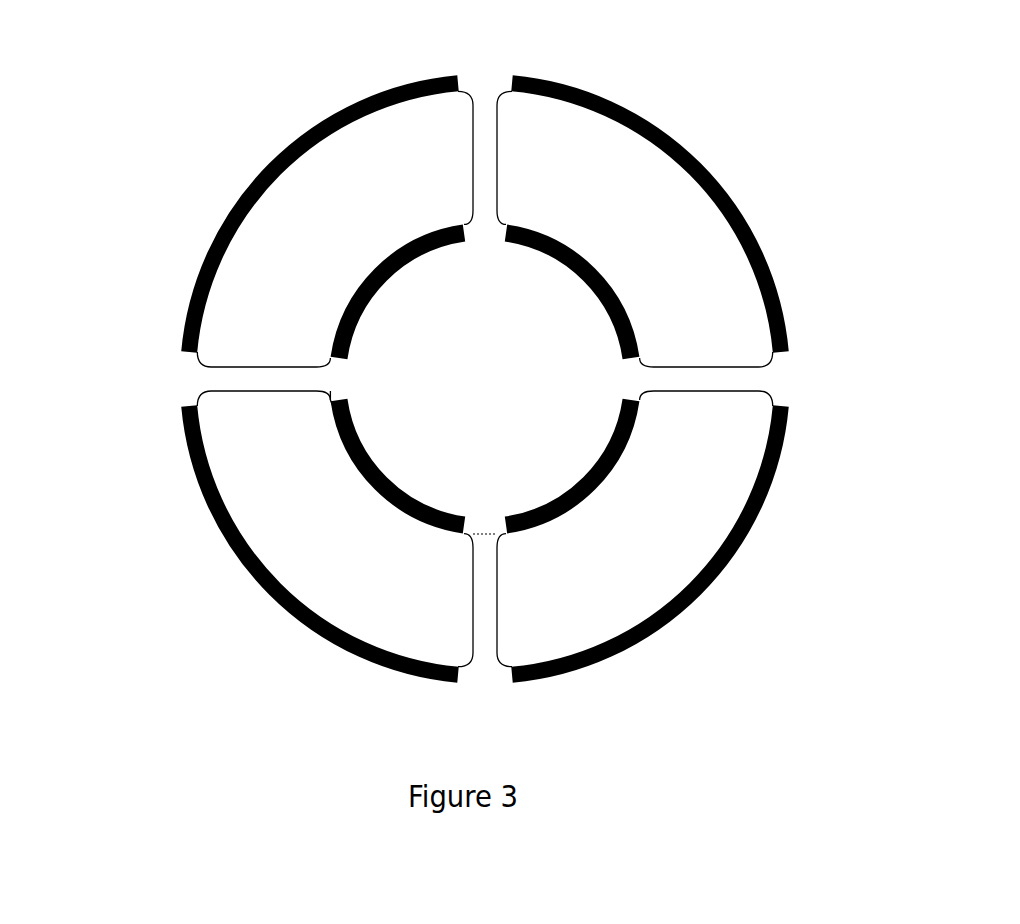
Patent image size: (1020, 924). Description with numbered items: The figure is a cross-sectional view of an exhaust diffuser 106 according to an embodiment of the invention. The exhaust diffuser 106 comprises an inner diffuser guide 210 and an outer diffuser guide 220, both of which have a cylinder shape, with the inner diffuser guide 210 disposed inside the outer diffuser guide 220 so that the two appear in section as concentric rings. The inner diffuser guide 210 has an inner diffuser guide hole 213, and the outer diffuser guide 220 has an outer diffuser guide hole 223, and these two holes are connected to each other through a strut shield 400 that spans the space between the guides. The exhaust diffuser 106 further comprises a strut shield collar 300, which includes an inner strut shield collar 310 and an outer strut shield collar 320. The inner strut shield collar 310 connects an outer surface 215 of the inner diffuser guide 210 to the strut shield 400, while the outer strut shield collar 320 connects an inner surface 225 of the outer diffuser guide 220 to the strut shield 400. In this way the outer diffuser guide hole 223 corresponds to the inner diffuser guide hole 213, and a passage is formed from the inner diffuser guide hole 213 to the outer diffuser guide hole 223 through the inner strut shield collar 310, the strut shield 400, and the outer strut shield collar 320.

The exhaust diffuser 106 is at (83, 52).
The strut shield 400 is at (449, 147).
The strut shield collar 300 is at (798, 103).
The outer strut shield collar 320 is at (524, 107).
The inner strut shield collar 310 is at (528, 206).
The outer diffuser guide 220 is at (196, 517).
The inner surface 225 is at (224, 486).
The inner diffuser guide 210 is at (373, 490).
The outer surface 215 is at (321, 422).
The inner diffuser guide hole 213 is at (368, 373).
The outer diffuser guide hole 223 is at (179, 374).